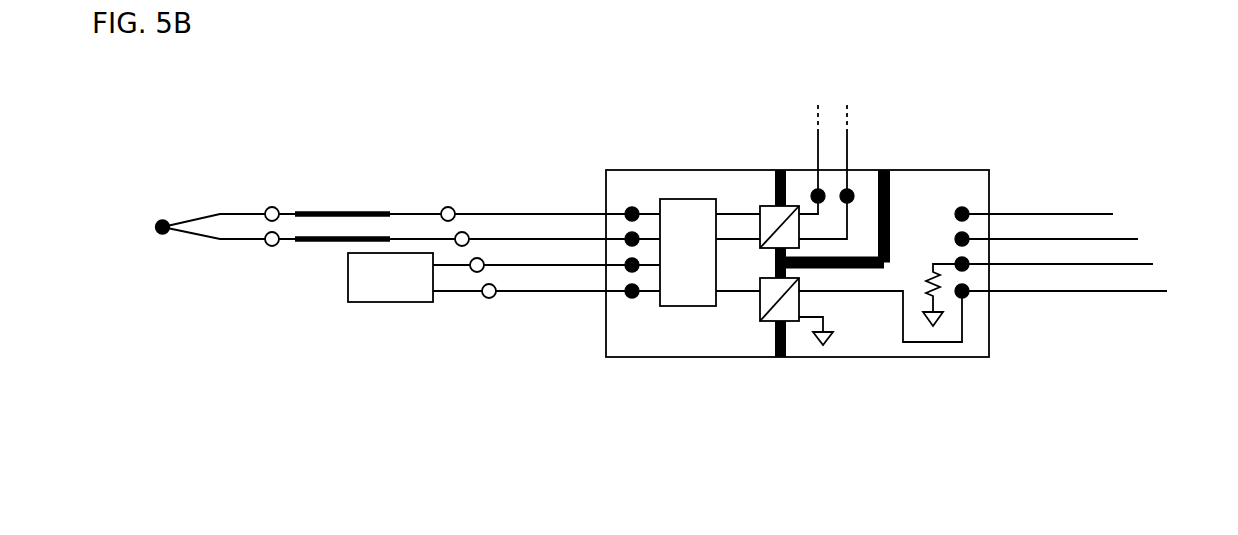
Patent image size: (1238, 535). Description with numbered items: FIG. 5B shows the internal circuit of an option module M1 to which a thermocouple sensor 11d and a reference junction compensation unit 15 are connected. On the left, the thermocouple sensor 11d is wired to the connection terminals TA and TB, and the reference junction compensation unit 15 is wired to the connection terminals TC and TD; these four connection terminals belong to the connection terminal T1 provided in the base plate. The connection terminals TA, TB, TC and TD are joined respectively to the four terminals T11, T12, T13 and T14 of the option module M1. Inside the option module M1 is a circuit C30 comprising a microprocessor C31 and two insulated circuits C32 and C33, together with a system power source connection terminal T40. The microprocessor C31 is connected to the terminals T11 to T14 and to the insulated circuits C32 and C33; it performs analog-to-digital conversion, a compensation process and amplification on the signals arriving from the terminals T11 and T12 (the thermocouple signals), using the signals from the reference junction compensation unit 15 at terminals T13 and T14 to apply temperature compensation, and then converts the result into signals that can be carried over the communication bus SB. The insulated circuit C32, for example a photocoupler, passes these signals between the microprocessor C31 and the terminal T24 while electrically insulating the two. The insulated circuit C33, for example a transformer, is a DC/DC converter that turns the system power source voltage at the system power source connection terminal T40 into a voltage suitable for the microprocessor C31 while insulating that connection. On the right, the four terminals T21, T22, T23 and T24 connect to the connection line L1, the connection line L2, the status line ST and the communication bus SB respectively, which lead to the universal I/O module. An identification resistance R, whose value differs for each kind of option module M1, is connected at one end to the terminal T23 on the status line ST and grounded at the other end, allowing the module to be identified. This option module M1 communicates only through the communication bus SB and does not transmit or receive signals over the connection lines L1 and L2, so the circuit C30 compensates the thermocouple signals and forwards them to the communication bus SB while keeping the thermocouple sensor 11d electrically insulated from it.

The thermocouple sensor 11d is at (172, 200).
The RJC (Reference Junction Compensation) 15 is at (375, 304).
The connection terminal T1 is at (437, 318).
The connection terminal TA is at (442, 209).
The connection terminal TB is at (462, 233).
The connection terminal TC is at (474, 271).
The connection terminal TD is at (490, 298).
The option module M1 is at (957, 155).
The circuit C30 is at (732, 318).
The microprocessor C31 is at (689, 199).
The insulated circuit C32 is at (767, 321).
The insulated circuit C33 is at (770, 206).
The system power source connection terminal T40 is at (852, 188).
The terminal T11 is at (631, 207).
The terminal T12 is at (627, 236).
The terminal T13 is at (627, 268).
The terminal T14 is at (632, 298).
The identification resistance R is at (926, 281).
The terminal T21 is at (967, 208).
The terminal T22 is at (967, 234).
The terminal T23 is at (968, 270).
The terminal T24 is at (962, 298).
The connection line L1 is at (1073, 214).
The connection line L2 is at (1100, 239).
The status line ST is at (1120, 264).
The communication bus SB is at (1150, 291).